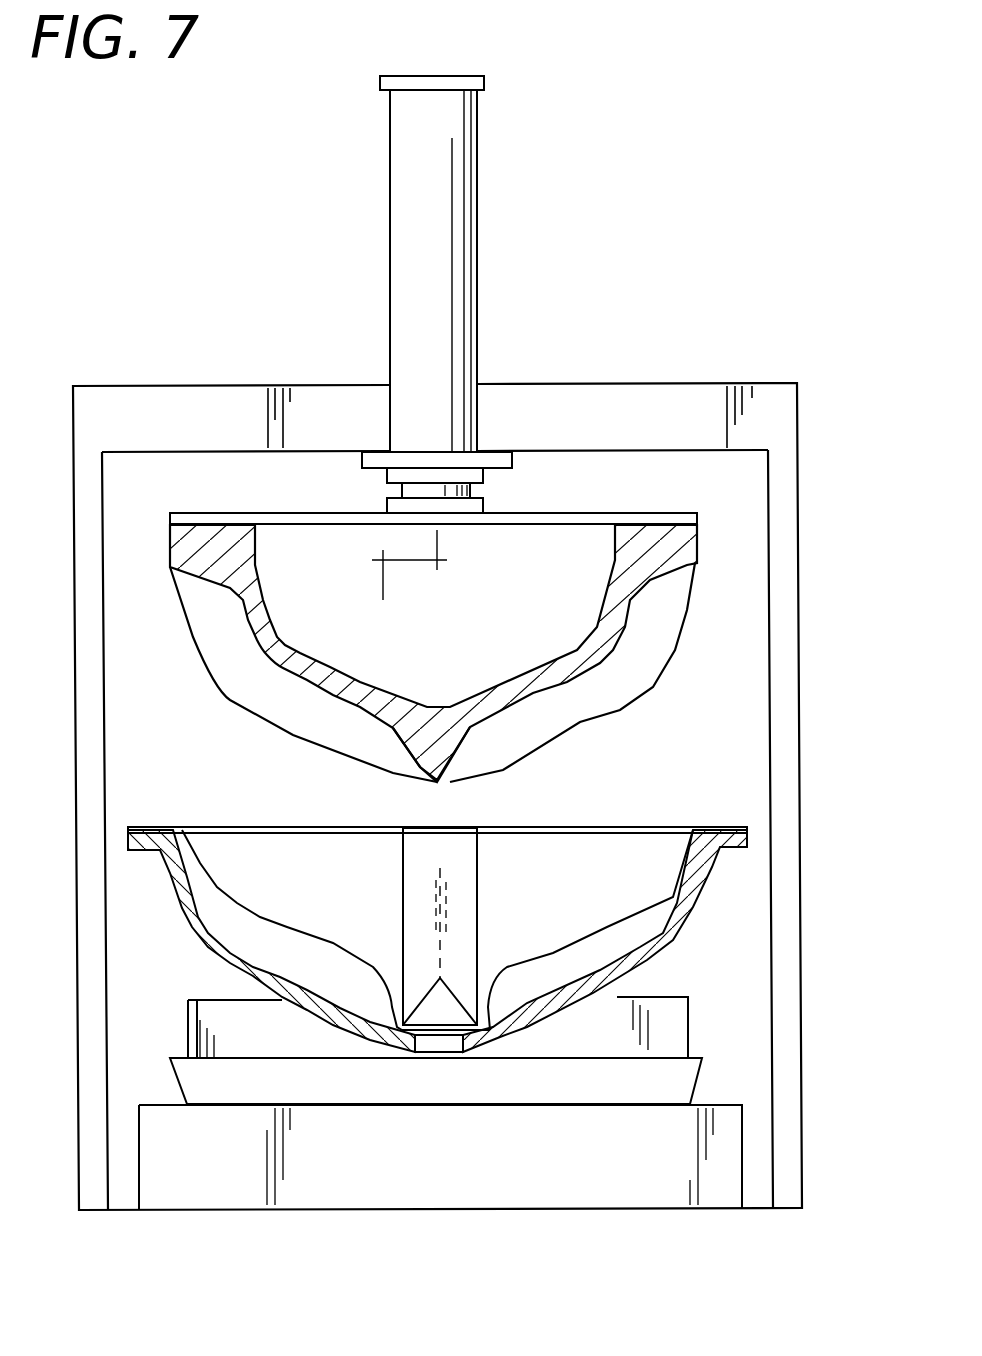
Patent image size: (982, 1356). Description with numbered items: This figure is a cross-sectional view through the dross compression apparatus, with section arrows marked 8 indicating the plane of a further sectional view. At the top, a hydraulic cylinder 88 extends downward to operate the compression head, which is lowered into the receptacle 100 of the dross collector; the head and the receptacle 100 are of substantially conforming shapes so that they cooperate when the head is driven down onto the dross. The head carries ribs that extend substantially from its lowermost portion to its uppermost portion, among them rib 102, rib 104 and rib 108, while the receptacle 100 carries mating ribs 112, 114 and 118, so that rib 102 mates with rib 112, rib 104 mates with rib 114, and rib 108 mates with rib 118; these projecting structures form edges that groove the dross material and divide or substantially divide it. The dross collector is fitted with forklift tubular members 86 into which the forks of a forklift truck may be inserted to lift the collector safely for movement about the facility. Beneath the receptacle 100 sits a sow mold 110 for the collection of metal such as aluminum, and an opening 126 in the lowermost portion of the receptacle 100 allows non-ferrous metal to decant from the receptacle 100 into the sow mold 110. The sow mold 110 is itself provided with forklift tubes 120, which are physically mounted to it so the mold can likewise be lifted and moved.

The section line 8- 8 is at (415, 13).
The forklift tubular members 86 is at (687, 1017).
The hydraulic cylinder 88 is at (475, 245).
The receptacle 100 is at (693, 830).
The rib 102 is at (285, 730).
The rib 104 is at (425, 775).
The rib 108 is at (685, 615).
The sow mold 110 is at (700, 1077).
The mating rib 112 is at (267, 917).
The mating rib 114 is at (477, 837).
The mating rib 118 is at (633, 897).
The forklift tubes 120 is at (743, 1163).
The opening 126 is at (460, 1040).